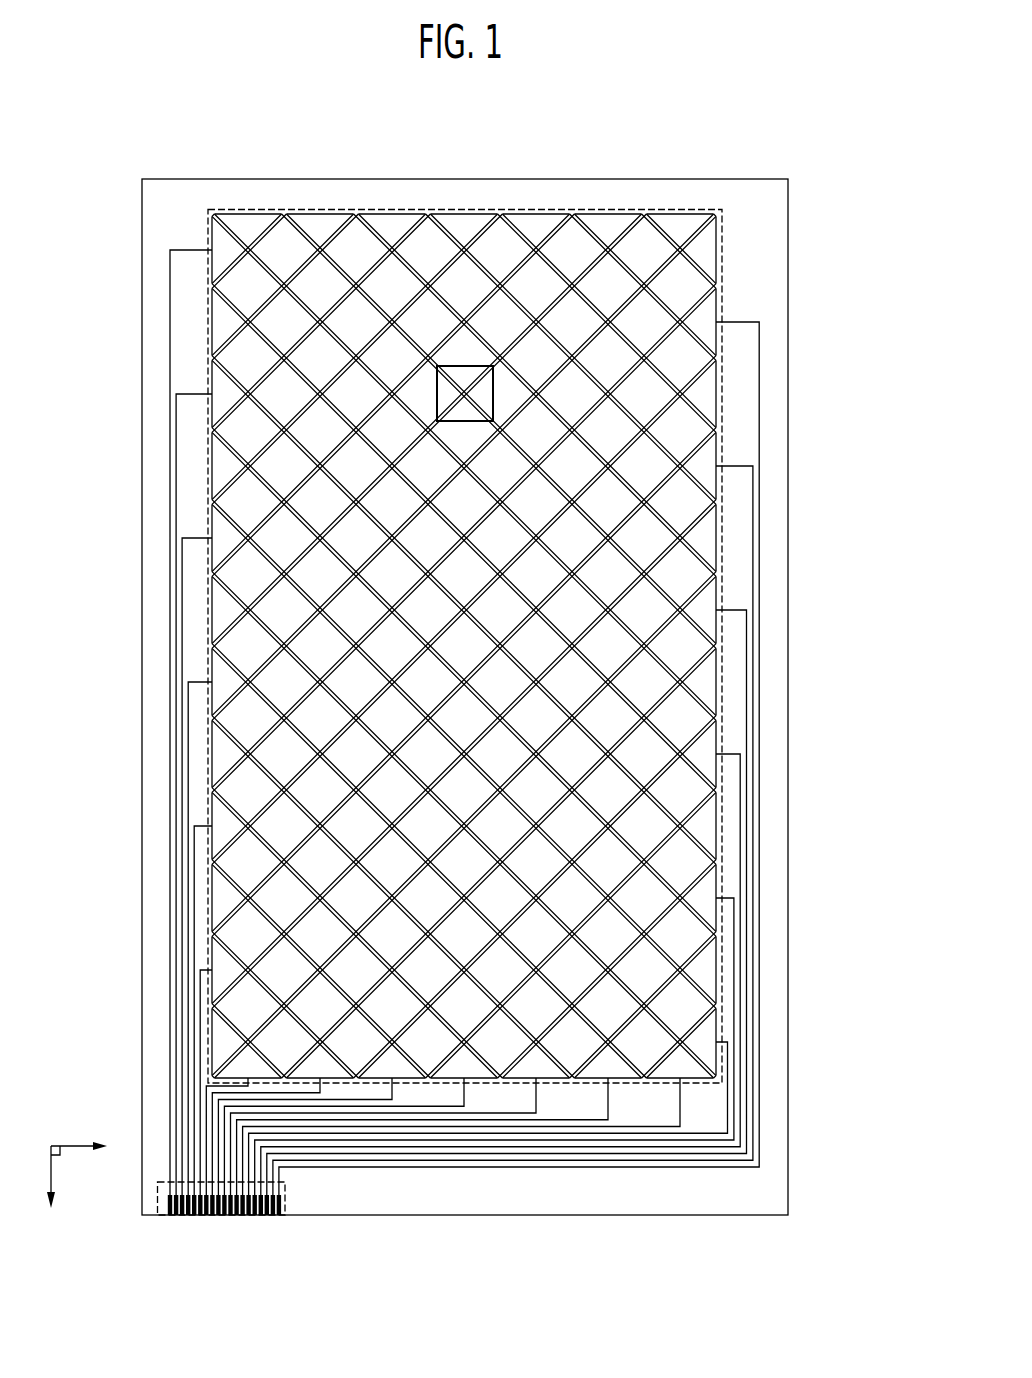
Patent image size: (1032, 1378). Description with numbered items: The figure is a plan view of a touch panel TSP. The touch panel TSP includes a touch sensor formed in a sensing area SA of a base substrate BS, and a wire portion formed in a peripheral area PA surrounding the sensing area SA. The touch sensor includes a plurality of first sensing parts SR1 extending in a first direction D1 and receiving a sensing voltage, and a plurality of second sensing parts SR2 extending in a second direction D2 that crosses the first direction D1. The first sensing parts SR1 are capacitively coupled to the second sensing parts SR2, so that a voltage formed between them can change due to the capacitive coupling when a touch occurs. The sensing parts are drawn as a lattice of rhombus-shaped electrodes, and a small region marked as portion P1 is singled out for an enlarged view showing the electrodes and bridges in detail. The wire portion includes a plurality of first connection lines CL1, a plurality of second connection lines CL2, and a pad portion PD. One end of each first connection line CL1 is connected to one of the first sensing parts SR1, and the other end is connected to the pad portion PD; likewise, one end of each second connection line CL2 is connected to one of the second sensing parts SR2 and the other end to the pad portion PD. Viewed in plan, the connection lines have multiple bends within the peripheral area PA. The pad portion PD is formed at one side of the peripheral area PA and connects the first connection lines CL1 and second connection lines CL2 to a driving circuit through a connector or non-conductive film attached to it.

The touch panel TSP is at (822, 138).
The base substrate BS is at (545, 179).
The peripheral area PA is at (713, 190).
The sensing area SA is at (627, 209).
The first sensing parts SR1 is at (650, 320).
The second sensing parts SR2 is at (612, 283).
The portion P1 is at (465, 366).
The first connection lines CL1 is at (190, 392).
The second connection lines CL2 is at (682, 1103).
The pad portion PD is at (285, 1198).
The first direction D1 is at (91, 1148).
The second direction D2 is at (52, 1194).